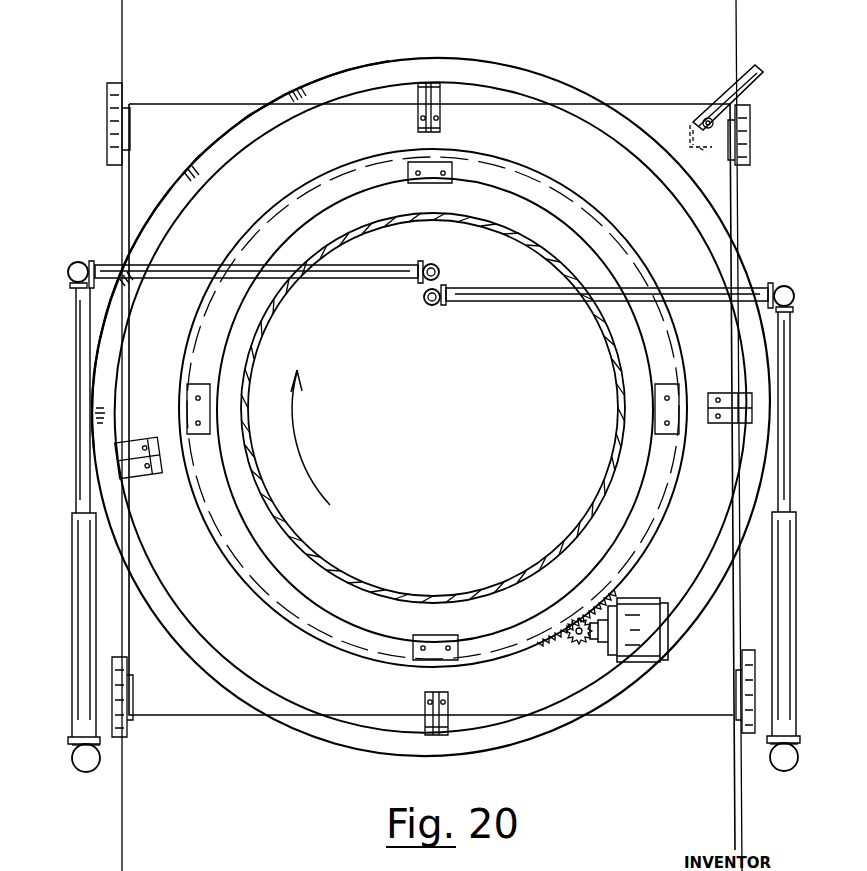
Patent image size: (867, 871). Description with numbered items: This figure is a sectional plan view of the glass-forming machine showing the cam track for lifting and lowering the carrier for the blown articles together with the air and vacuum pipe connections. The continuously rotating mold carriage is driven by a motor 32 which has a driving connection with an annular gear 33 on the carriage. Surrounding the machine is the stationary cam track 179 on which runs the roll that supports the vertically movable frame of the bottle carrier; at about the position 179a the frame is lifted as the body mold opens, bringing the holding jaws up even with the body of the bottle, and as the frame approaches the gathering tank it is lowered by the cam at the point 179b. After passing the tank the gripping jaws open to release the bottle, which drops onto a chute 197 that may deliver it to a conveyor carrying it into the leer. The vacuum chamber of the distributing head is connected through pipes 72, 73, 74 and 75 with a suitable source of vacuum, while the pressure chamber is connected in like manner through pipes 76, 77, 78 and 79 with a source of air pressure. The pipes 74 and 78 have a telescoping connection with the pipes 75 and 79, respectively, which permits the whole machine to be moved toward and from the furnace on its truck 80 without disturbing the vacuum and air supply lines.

The stationary cam track 179 is at (312, 740).
The position on cam track 179a is at (106, 320).
The point on cam track 179b is at (228, 147).
The truck 80 is at (190, 717).
The chute 197 is at (726, 100).
The pipe 72 is at (438, 267).
The pipe 73 is at (364, 277).
The pipe 76 is at (425, 304).
The pipe 77 is at (520, 300).
The pipe 74 is at (78, 334).
The pipe 75 is at (80, 554).
The pipe 78 is at (788, 330).
The pipe 79 is at (792, 556).
The motor 32 is at (646, 598).
The annular gear 33 is at (550, 642).